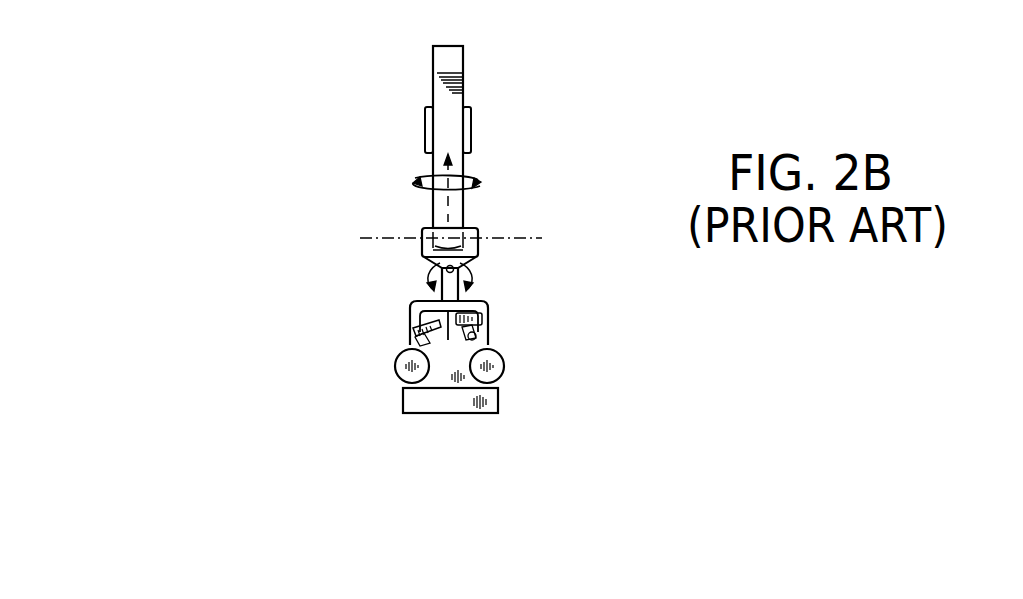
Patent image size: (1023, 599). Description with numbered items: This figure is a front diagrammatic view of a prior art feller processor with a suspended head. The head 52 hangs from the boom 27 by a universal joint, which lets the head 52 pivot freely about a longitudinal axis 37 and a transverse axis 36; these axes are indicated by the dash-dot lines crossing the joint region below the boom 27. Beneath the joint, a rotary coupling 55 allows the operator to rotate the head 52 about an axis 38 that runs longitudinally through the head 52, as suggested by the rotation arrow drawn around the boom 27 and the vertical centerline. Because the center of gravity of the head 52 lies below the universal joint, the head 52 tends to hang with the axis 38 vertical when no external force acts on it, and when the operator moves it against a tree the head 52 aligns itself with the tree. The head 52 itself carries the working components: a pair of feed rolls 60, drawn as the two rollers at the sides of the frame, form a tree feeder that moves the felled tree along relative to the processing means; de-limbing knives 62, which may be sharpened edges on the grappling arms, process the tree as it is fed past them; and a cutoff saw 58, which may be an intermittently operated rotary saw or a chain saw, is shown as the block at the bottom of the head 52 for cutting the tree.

The boom 27 is at (466, 62).
The axis 38 is at (455, 210).
The transverse axis 36 is at (530, 240).
The longitudinal axis 37 is at (420, 262).
The rotary coupling 55 is at (456, 298).
The head 52 is at (377, 331).
The de-limbing knives 62 is at (492, 321).
The feed rolls 60 is at (395, 366).
The cutoff saw 58 is at (431, 407).